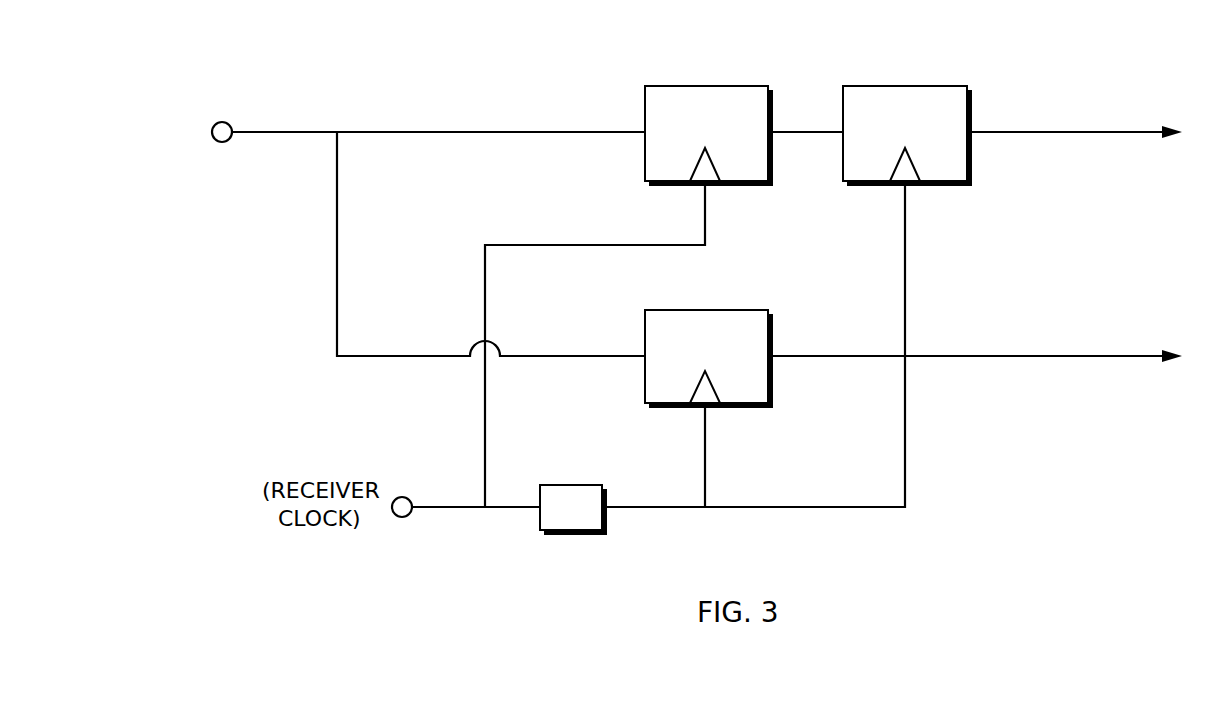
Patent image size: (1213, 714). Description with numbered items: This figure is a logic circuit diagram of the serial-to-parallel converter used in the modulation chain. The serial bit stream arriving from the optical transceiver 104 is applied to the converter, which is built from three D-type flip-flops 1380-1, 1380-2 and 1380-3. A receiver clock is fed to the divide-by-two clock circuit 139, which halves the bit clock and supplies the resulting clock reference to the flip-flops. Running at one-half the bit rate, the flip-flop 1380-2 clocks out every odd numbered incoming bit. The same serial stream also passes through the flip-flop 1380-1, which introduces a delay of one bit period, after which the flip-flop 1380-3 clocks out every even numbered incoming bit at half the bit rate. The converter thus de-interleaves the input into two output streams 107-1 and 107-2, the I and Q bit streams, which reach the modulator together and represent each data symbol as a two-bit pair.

The bitstream source (input from element 104) 104 is at (223, 97).
The divide-by-two clock circuit 139 is at (578, 532).
The D-type flip-flop 1380-1 is at (663, 85).
The D-type flip-flop 1380-2 is at (728, 310).
The D-type flip-flop 1380-3 is at (863, 85).
The output stream 107-1 is at (1055, 133).
The output stream 107-2 is at (1055, 357).